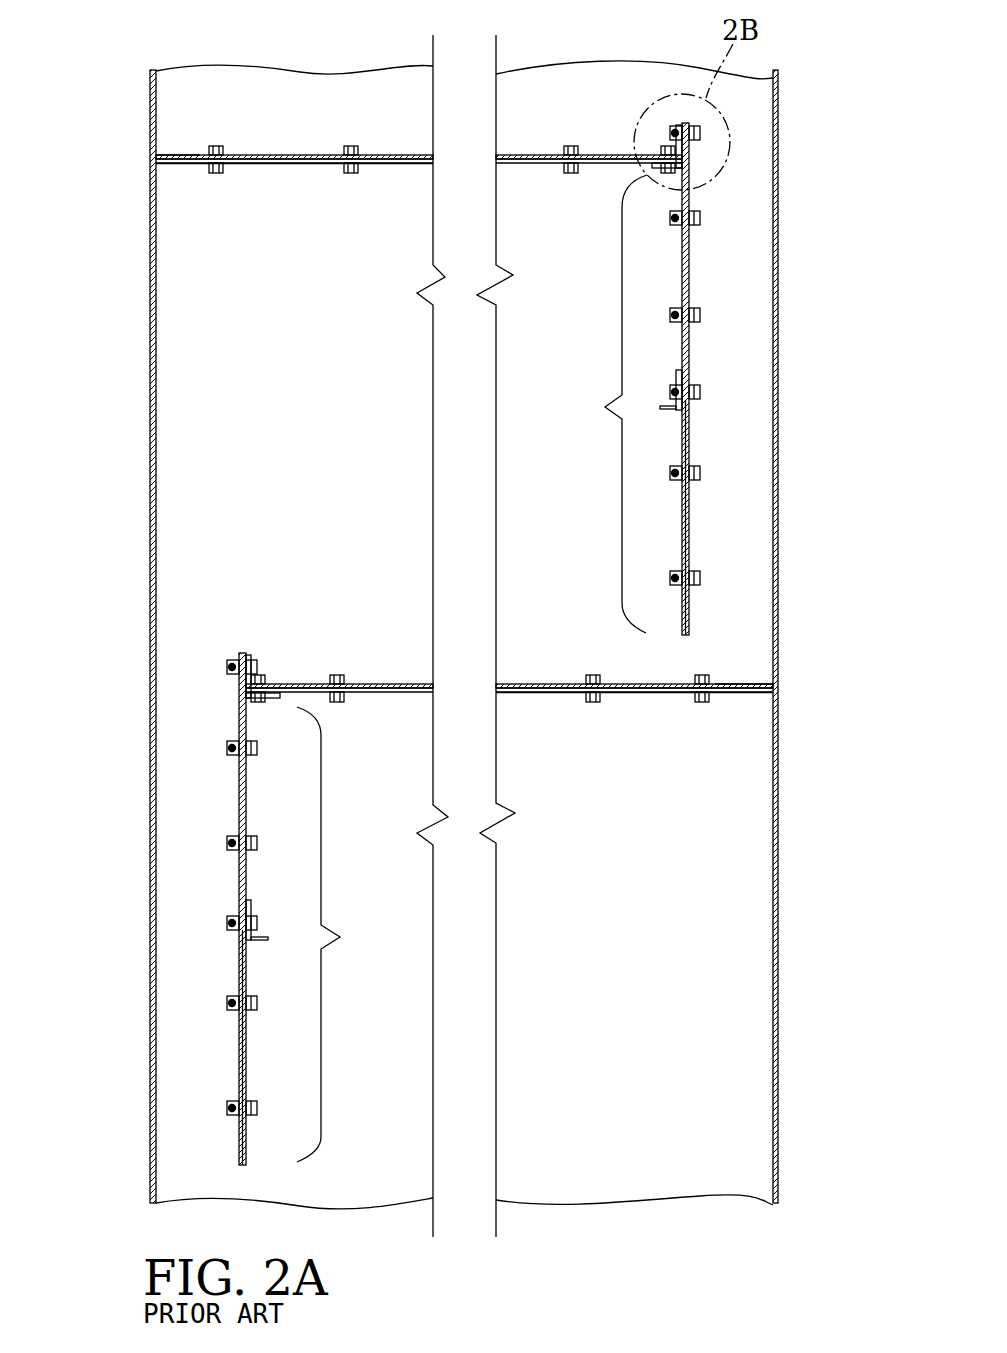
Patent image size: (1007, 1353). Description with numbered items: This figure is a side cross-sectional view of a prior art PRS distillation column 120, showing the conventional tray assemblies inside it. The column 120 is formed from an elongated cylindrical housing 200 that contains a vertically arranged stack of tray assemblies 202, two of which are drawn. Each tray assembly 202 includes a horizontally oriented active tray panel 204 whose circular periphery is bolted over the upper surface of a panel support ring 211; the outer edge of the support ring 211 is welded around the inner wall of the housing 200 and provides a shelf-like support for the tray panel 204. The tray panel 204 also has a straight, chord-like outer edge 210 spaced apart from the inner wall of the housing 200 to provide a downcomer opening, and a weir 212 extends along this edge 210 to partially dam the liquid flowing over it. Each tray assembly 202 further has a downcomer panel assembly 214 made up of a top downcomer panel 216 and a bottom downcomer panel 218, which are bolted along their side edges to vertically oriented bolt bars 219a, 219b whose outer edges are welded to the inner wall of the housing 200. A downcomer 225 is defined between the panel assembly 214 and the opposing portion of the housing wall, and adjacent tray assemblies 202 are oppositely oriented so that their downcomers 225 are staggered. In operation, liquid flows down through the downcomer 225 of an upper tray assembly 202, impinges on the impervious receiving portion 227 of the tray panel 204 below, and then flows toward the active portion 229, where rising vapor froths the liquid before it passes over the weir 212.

The distillation column 120 is at (154, 52).
The cylindrical housing 200 is at (150, 458).
The tray assembly 202 is at (378, 122).
The active tray panel 204 is at (543, 140).
The chord-like outer edge 210 is at (690, 158).
The panel support ring 211 is at (385, 166).
The weir 212 is at (683, 122).
The downcomer panel assembly 214 is at (472, 668).
The top downcomer panel 216 is at (683, 255).
The bottom downcomer panel 218 is at (682, 540).
The bolt bar 219a is at (240, 800).
The bolt bar 219b is at (690, 254).
The downcomer 225 is at (750, 365).
The receiving portion 227 is at (178, 152).
The active portion 229 is at (300, 152).